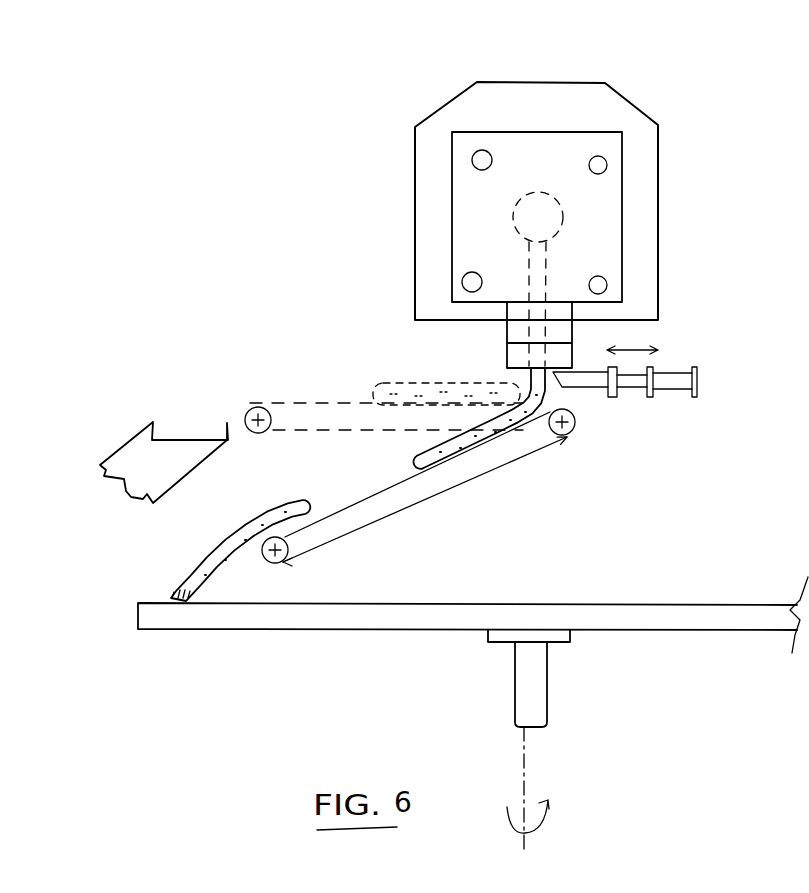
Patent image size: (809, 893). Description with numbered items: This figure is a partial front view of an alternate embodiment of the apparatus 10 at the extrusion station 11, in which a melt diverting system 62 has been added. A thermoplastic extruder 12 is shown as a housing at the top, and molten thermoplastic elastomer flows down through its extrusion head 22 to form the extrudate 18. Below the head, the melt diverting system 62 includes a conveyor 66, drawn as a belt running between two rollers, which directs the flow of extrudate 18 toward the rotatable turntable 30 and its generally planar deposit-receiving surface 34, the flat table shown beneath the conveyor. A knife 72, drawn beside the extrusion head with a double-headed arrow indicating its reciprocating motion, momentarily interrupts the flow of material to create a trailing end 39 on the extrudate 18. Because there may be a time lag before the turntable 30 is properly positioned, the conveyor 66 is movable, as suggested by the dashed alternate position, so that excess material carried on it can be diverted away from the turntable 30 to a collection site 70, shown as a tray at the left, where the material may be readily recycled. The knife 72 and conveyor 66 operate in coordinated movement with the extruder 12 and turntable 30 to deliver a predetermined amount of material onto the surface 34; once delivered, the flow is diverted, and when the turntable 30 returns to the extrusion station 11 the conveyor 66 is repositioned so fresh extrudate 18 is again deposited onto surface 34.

The apparatus 10 is at (355, 99).
The extrusion station 11 is at (712, 210).
The thermoplastic extruder 12 is at (650, 177).
The extrusion head 22 is at (590, 127).
The knife 72 is at (672, 380).
The melt diverting system 62 is at (632, 512).
The conveyor 66 is at (436, 497).
The trailing end 39 is at (303, 507).
The extrudate 18 is at (218, 563).
The collection site 70 is at (168, 480).
The deposit-receiving surface 34 is at (354, 602).
The turntable 30 is at (667, 622).